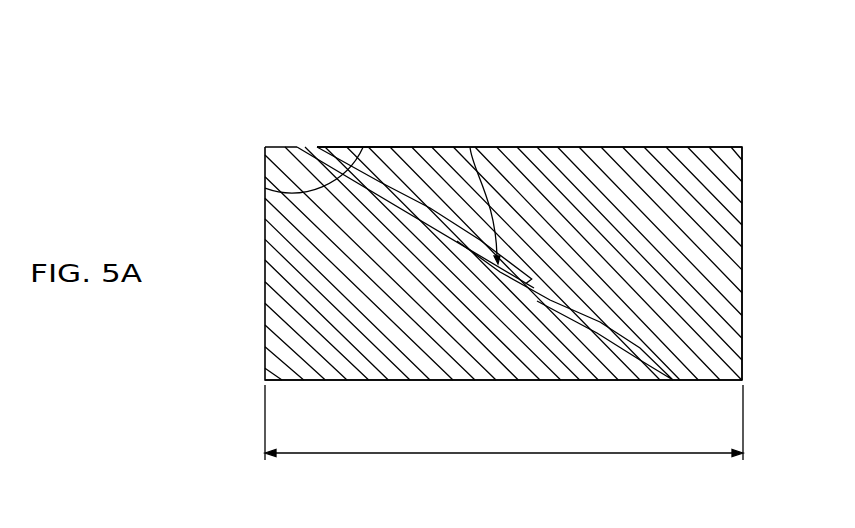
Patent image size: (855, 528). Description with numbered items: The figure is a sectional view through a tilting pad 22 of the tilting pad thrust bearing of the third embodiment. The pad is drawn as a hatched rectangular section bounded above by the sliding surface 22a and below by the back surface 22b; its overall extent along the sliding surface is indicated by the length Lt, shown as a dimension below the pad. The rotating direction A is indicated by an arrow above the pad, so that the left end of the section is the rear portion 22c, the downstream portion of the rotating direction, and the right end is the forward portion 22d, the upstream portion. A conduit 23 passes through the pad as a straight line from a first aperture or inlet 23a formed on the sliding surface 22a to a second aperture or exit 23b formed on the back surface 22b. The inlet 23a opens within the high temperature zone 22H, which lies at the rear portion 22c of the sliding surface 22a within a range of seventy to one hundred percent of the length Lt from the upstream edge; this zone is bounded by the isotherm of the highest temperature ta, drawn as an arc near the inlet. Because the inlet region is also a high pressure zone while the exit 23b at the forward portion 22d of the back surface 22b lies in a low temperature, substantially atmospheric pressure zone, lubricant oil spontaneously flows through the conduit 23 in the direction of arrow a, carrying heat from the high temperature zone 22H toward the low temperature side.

The tilting pad 22 is at (606, 119).
The sliding surface 22a is at (527, 147).
The back surface 22b is at (417, 381).
The rear portion 22c is at (346, 147).
The forward portion 22d is at (700, 147).
The high temperature zone 22H is at (330, 147).
The conduit 23 is at (424, 200).
The first aperture (inlet) 23a is at (304, 147).
The second aperture (exit) 23b is at (688, 381).
The arrow indicating lubricant flow direction a is at (470, 147).
The temperature ta is at (301, 170).
The rotating direction A is at (597, 40).
The length of the sliding surface Lt is at (504, 422).